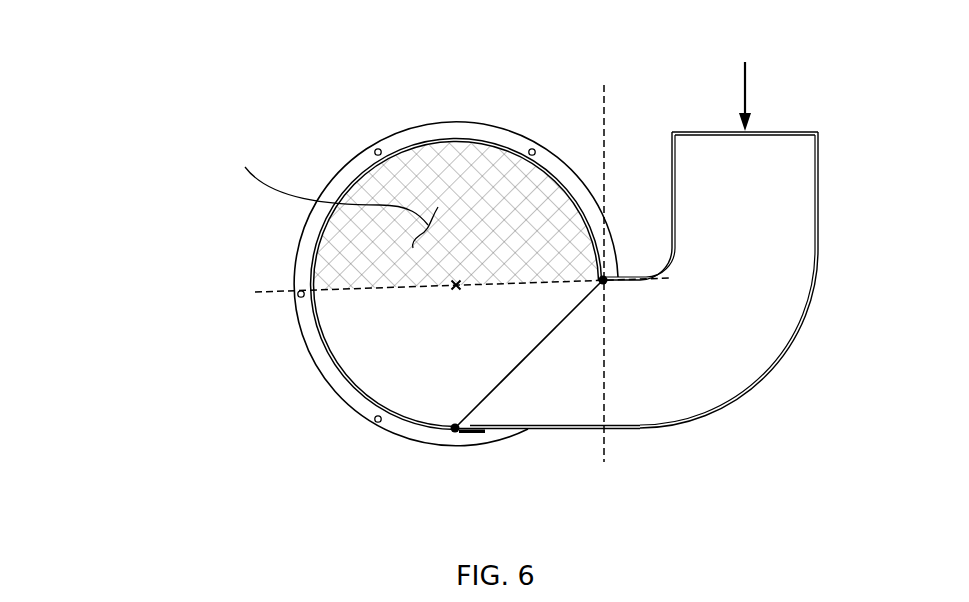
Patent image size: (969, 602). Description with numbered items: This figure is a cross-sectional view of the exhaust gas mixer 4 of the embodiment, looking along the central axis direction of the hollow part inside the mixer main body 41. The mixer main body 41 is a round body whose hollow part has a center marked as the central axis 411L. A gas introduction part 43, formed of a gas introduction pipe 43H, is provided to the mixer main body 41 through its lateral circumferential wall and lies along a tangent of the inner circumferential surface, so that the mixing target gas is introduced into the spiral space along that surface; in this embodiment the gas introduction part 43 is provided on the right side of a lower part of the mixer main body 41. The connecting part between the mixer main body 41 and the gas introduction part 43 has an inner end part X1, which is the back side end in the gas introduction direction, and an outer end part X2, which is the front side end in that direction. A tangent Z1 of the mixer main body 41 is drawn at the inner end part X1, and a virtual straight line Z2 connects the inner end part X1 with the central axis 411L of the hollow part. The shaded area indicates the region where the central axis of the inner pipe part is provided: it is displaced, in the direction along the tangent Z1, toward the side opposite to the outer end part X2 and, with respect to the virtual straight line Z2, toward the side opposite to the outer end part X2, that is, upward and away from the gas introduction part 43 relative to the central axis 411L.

The exhaust gas mixer 4 is at (432, 262).
The mixer main body 41 is at (428, 138).
The gas introduction part 43 is at (636, 324).
The gas introduction pipe 43H is at (744, 390).
The tangent of the mixer main body Z1 is at (602, 122).
The virtual straight line Z2 is at (390, 289).
The inner end part X1 is at (608, 287).
The outer end part X2 is at (455, 433).
The central axis of the hollow part 411L is at (455, 292).